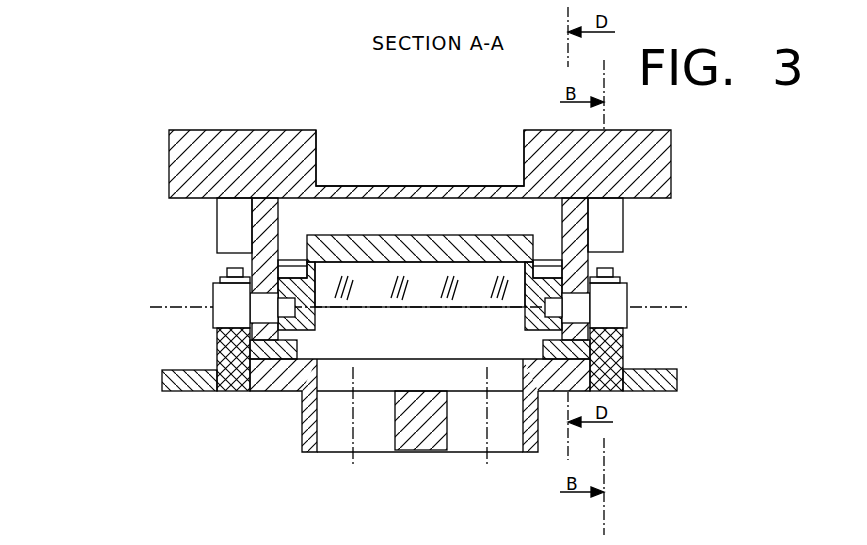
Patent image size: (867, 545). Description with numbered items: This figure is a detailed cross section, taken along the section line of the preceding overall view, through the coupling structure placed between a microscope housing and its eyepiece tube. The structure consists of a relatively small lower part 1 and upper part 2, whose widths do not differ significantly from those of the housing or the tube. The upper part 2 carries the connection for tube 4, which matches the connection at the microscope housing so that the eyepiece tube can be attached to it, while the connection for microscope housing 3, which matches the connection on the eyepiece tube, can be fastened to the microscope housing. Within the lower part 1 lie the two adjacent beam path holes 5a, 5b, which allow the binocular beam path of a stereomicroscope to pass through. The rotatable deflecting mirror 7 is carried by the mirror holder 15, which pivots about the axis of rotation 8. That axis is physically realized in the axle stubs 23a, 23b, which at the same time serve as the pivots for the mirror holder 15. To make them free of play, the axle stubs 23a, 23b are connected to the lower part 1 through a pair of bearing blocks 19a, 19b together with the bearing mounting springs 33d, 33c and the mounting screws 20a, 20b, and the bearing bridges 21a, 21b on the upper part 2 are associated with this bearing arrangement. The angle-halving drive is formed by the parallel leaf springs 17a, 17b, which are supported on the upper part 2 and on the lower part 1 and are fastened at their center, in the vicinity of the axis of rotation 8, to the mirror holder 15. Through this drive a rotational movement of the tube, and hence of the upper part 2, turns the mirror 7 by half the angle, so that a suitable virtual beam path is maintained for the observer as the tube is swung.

The lower part 1 is at (653, 391).
The upper part 2 is at (232, 130).
The connection for microscope housing 3 is at (297, 430).
The connection for tube 4 is at (368, 130).
The beam path hole 5a is at (390, 427).
The beam path hole 5b is at (523, 423).
The rotatable deflecting mirror 7 is at (475, 327).
The axis of rotation 8 is at (220, 391).
The mirror holder 15 is at (488, 243).
The leaf spring 17a is at (293, 278).
The leaf spring 17b is at (570, 247).
The bearing block 19a is at (230, 340).
The bearing block 19b is at (610, 350).
The mounting screw 20a is at (233, 267).
The mounting screw 20b is at (607, 267).
The bearing bridge on the upper part 21a is at (260, 208).
The bearing bridge on the upper part 21b is at (590, 218).
The axle stub 23a is at (223, 300).
The axle stub 23b is at (613, 290).
The bearing mounting spring 33c is at (623, 277).
The bearing mounting spring 33d is at (218, 277).